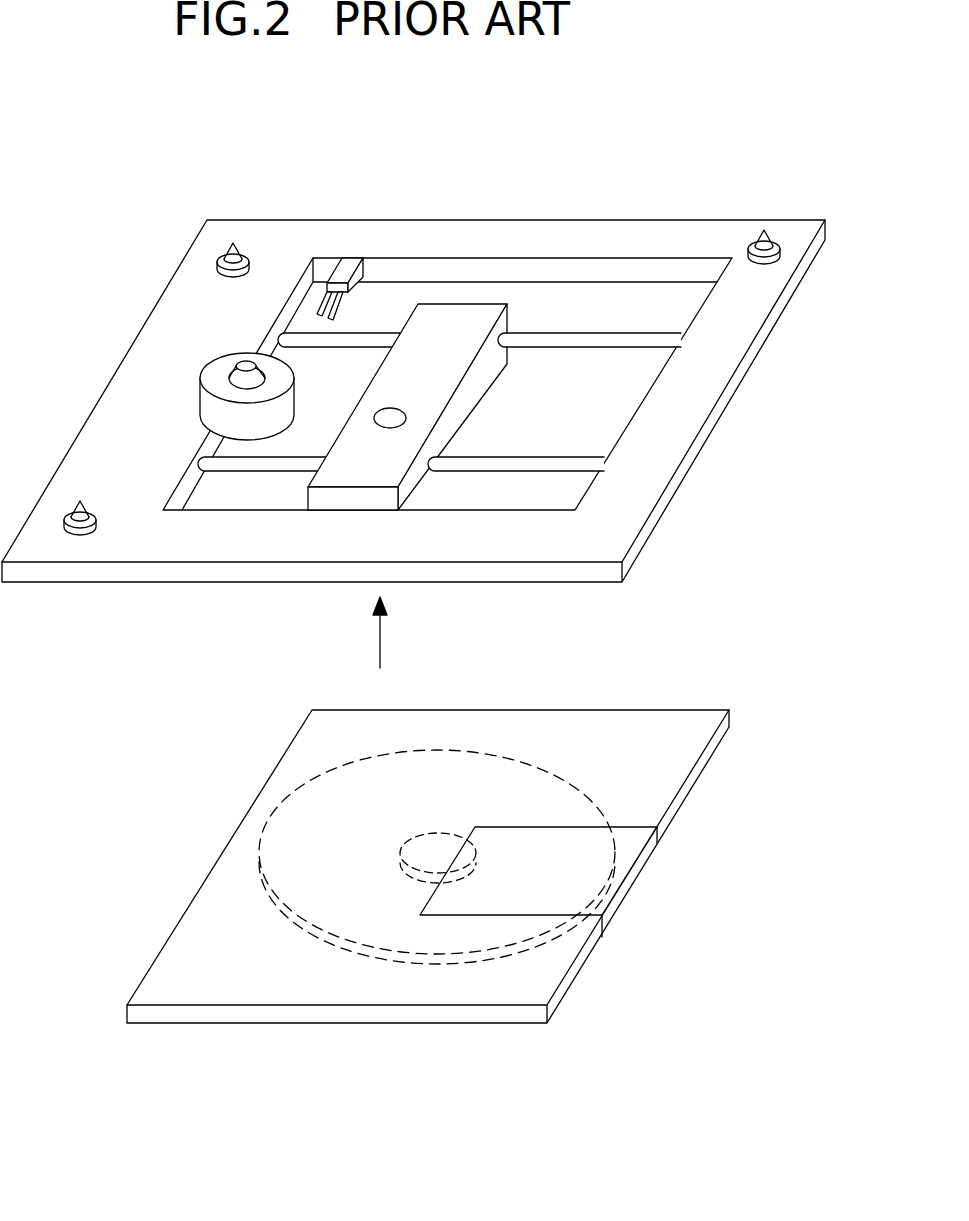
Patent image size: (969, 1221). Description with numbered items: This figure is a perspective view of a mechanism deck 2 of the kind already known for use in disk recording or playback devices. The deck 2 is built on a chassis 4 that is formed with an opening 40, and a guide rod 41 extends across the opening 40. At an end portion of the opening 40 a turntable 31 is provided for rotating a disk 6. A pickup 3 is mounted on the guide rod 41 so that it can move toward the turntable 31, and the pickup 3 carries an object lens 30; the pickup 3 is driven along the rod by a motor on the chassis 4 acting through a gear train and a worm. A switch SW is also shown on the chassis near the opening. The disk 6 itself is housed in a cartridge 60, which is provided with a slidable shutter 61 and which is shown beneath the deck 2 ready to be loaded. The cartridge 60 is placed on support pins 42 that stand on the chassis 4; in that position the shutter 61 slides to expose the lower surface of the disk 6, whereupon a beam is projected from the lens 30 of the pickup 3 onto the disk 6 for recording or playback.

The mechanism deck 2 is at (766, 172).
The chassis 4 is at (633, 230).
The opening 40 is at (405, 268).
The guide rod 41 is at (647, 343).
The support pins 42 is at (216, 258).
The switch SW is at (343, 267).
The pickup 3 is at (465, 322).
The object lens 30 is at (392, 424).
The turntable 31 is at (218, 372).
The disk 6 is at (533, 765).
The cartridge 60 is at (673, 728).
The shutter 61 is at (632, 850).